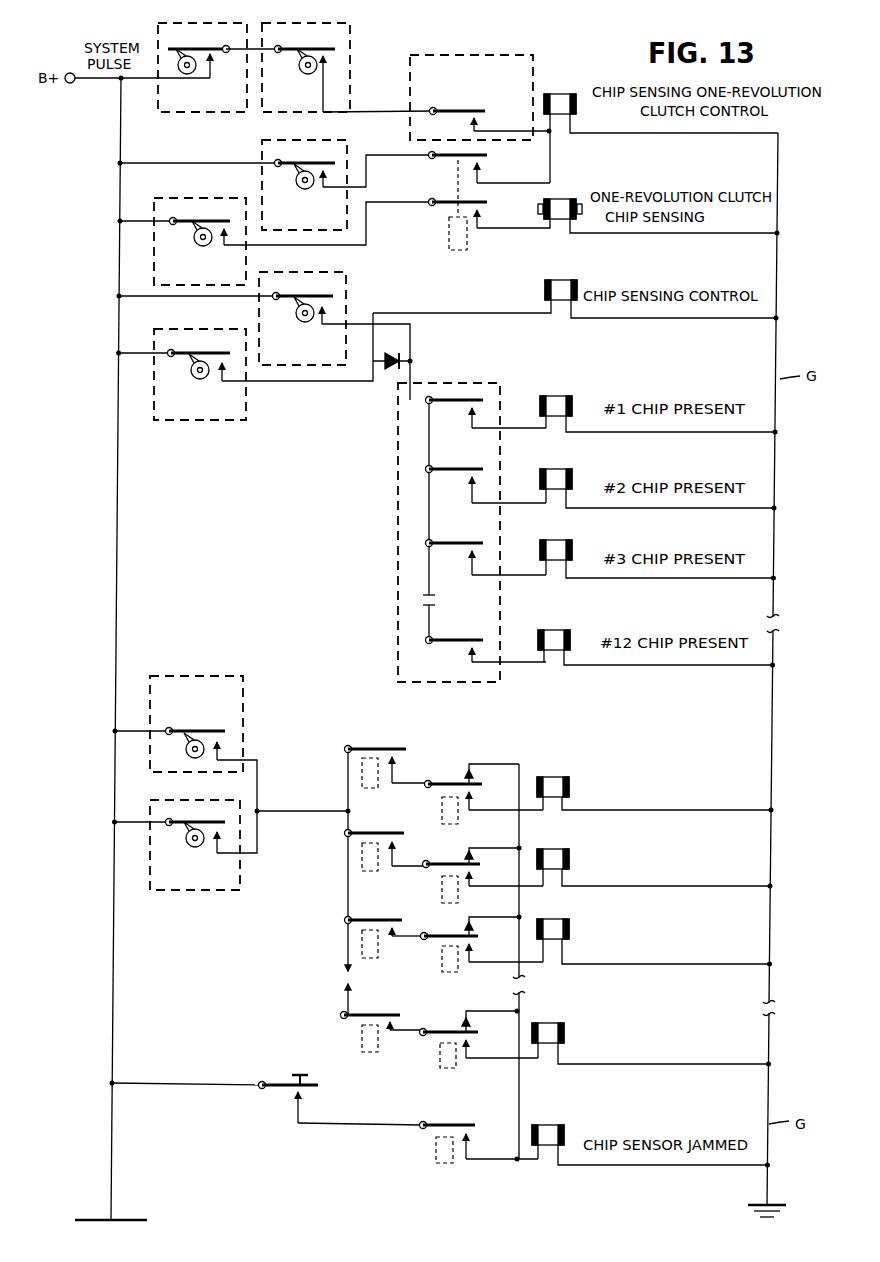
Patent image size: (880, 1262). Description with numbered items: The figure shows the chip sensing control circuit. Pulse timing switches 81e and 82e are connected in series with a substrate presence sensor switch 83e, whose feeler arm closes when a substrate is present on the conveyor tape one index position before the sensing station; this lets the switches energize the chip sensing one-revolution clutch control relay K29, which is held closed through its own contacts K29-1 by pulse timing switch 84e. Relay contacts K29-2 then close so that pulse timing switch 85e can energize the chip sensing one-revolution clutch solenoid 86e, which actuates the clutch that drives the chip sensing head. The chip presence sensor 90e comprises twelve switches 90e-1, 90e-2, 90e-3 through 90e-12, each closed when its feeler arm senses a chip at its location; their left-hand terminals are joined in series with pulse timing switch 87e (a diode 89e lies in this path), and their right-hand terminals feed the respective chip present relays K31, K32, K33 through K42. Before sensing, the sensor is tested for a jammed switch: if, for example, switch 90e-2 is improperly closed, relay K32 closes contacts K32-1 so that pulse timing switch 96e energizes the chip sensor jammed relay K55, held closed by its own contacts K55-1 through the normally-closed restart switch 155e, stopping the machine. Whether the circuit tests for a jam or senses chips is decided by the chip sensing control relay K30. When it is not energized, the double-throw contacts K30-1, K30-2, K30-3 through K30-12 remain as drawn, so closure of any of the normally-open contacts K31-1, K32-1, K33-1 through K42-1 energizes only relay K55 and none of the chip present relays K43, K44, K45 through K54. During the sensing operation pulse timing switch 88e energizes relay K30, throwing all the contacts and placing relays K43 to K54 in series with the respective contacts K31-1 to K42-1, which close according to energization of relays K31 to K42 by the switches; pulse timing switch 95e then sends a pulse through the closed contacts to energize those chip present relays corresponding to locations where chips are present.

The pulse timing switch 81e is at (187, 112).
The pulse timing switch 82e is at (273, 112).
The substrate presence sensor switch 83e is at (410, 73).
The pulse timing switch 84e is at (262, 186).
The pulse timing switch 85e is at (172, 198).
The chip sensing one-revolution clutch solenoid 86e is at (560, 198).
The pulse timing switch 87e is at (348, 284).
The pulse timing switch 88e is at (247, 412).
The diode 89e is at (394, 372).
The chip presence sensor 90e is at (408, 532).
The chip presence sensor switch 90e-1 is at (459, 410).
The chip presence sensor switch 90e-2 is at (454, 479).
The chip presence sensor switch 90e-3 is at (456, 553).
The chip presence sensor switch 90e-12 is at (450, 643).
The pulse timing switch 95e is at (246, 690).
The pulse timing switch 96e is at (222, 890).
The restart switch 155e is at (310, 1088).
The chip sensing one-revolution clutch control relay K29 is at (566, 88).
The relay contacts K29-1 is at (488, 160).
The relay contacts K29-2 is at (488, 206).
The chip sensing control relay K30 is at (561, 279).
The double-throw relay contacts K30-1 is at (453, 780).
The double-throw relay contacts K30-2 is at (448, 862).
The double-throw relay contacts K30-3 is at (448, 934).
The double-throw relay contacts K30-12 is at (446, 1026).
The chip present relay K31 is at (557, 396).
The normally-open relay contacts K31-1 is at (388, 746).
The chip present relay K32 is at (557, 469).
The normally-open relay contacts K32-1 is at (399, 830).
The chip present relay K33 is at (557, 540).
The normally-open relay contacts K33-1 is at (391, 919).
The chip present relay K42 is at (548, 630).
The normally-open relay contacts K42-1 is at (389, 1012).
The chip present relay K43 is at (553, 777).
The chip present relay K44 is at (553, 849).
The chip present relay K45 is at (553, 919).
The chip present relay K54 is at (552, 1023).
The chip sensor jammed relay K55 is at (548, 1125).
The relay contacts K55-1 is at (449, 1123).